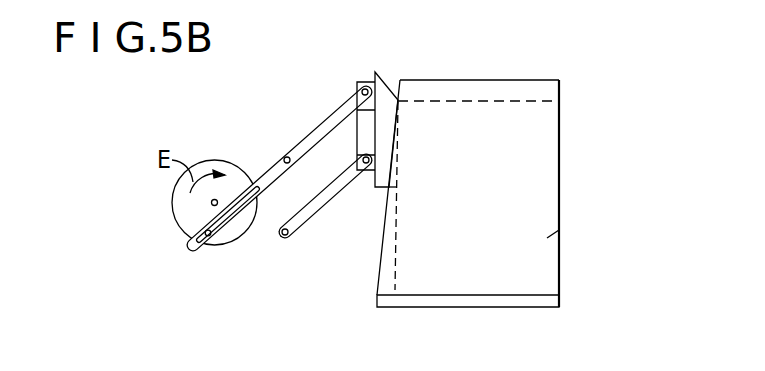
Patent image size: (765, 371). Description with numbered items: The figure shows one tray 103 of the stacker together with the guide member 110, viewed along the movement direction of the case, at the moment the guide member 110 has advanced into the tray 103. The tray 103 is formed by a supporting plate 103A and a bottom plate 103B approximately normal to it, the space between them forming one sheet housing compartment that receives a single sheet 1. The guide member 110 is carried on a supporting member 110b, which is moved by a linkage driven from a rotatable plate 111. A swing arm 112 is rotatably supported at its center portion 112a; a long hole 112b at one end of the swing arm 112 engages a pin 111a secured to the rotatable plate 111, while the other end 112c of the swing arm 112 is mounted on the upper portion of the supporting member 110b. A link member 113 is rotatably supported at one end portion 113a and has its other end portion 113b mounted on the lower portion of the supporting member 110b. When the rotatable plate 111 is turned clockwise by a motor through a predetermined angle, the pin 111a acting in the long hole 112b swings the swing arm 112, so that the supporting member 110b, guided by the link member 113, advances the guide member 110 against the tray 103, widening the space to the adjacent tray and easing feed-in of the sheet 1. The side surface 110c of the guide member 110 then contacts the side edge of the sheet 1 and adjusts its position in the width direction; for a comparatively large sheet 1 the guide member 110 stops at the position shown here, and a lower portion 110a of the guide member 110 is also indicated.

The sheet 1 is at (547, 238).
The tray 103 is at (572, 190).
The supporting plate 103A is at (522, 82).
The bottom plate 103B is at (544, 308).
The guide member 110 is at (386, 92).
The lower portion of pressure member 110a is at (397, 183).
The supporting member 110b is at (345, 96).
The side surface 110c is at (401, 146).
The rotatable plate 111 is at (220, 160).
The pin 111a is at (212, 250).
The swing arm 112 is at (317, 127).
The center portion 112a is at (286, 157).
The long hole 112b is at (230, 248).
The other end 112c is at (360, 75).
The link member 113 is at (313, 216).
The one end portion 113a is at (288, 236).
The other end portion 113b is at (362, 170).